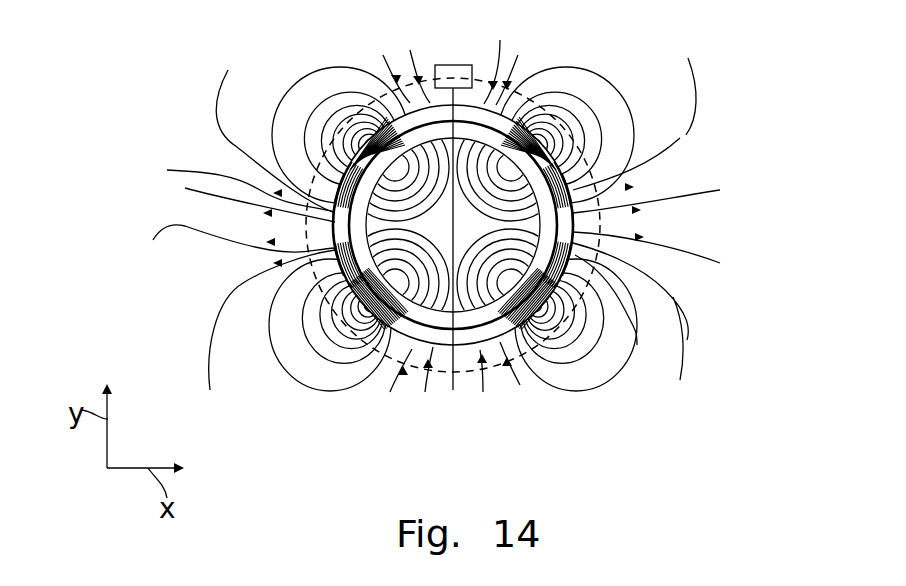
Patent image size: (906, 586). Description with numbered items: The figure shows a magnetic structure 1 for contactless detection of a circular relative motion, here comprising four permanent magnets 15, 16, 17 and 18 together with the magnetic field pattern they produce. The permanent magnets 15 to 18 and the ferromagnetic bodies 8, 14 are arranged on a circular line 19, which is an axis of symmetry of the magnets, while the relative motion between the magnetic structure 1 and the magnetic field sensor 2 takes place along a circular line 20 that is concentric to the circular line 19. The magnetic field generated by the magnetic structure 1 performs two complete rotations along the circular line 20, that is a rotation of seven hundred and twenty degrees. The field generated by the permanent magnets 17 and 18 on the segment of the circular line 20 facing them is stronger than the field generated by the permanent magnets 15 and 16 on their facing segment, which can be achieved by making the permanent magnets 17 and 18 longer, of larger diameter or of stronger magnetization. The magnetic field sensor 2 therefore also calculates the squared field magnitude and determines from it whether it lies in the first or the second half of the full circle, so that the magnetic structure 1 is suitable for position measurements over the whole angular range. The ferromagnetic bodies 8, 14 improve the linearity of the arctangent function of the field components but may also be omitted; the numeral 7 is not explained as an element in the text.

The magnetic structure 1 is at (636, 298).
The magnetic field sensor 2 is at (448, 65).
The magnetic field line 7 is at (300, 78).
The ferromagnetic body 8 is at (483, 113).
The ferromagnetic body 14 is at (233, 184).
The permanent magnet 15 is at (533, 125).
The permanent magnet 16 is at (538, 312).
The permanent magnet 17 is at (372, 312).
The permanent magnet 18 is at (345, 153).
The circular line 19 is at (243, 240).
The circular line 20 is at (573, 187).